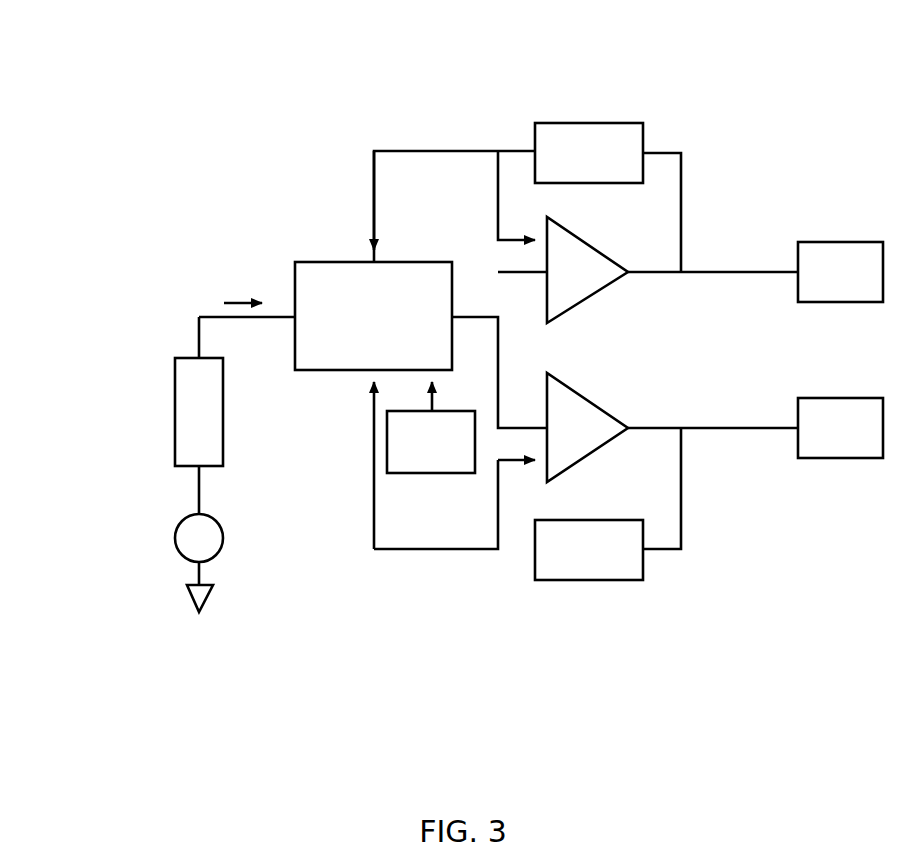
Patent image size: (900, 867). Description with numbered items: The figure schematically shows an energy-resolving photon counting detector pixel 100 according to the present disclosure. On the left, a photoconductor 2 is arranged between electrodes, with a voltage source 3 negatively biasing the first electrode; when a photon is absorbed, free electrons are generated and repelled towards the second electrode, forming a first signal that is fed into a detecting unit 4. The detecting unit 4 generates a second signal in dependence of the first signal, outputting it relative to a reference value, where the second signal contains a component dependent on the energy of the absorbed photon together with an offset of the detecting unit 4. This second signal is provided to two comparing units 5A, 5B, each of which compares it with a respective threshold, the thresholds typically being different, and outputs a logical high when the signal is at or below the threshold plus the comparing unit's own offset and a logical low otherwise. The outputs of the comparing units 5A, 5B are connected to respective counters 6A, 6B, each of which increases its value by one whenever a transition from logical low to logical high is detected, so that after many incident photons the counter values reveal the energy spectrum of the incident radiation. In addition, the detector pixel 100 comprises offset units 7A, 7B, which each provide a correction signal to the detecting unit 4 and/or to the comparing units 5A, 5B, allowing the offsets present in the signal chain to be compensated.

The detector pixel 100 is at (48, 148).
The photoconductor 2 is at (175, 400).
The voltage source 3 is at (176, 545).
The detecting unit 4 is at (320, 259).
The comparing unit 5A is at (610, 283).
The comparing unit 5B is at (598, 403).
The counter 6A is at (848, 236).
The counter 6B is at (838, 462).
The offset unit 7A is at (591, 122).
The offset unit 7B is at (575, 580).